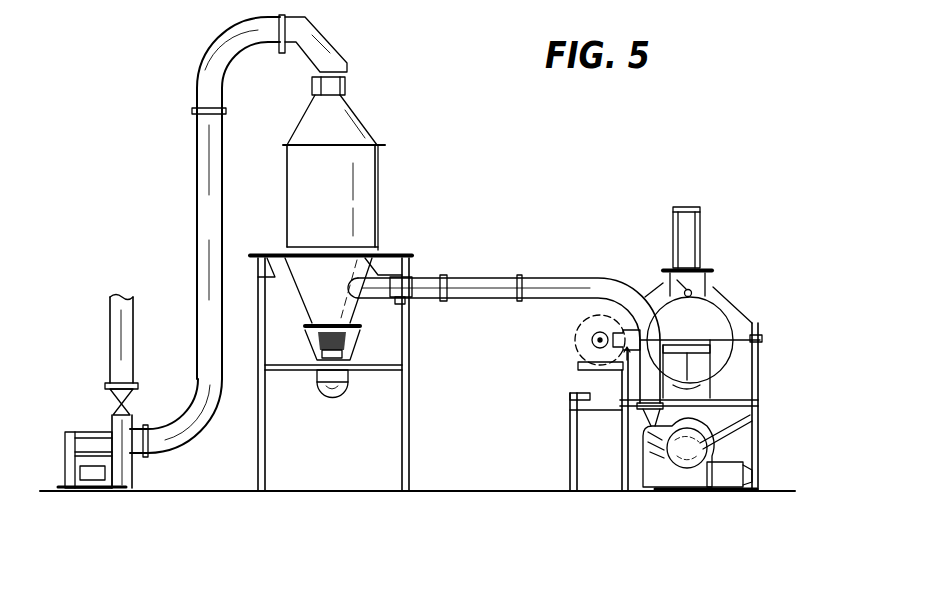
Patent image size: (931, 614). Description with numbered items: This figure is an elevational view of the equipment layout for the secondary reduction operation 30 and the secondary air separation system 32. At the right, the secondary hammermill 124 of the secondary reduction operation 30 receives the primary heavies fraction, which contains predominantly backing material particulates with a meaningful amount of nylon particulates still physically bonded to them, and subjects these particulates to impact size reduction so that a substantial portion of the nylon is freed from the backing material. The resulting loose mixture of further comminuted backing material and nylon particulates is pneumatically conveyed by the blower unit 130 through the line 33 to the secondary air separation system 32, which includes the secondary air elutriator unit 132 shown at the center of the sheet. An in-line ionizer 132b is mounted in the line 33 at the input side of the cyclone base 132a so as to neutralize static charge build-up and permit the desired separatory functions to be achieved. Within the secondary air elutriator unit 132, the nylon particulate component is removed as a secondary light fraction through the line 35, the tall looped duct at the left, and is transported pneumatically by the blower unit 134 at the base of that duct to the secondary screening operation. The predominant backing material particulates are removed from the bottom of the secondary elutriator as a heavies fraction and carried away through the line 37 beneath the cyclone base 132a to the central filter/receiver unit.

The secondary reduction operation 30 is at (676, 359).
The secondary air separation system 32 is at (372, 293).
The line 33 is at (550, 289).
The line 35 is at (207, 146).
The line 37 is at (330, 387).
The secondary hammermill 124 is at (718, 301).
The blower unit 130 is at (656, 460).
The secondary air elutriator unit 132 is at (341, 211).
The cyclone base 132a is at (353, 295).
The in-line ionizer 132b is at (407, 278).
The blower unit 134 is at (130, 456).